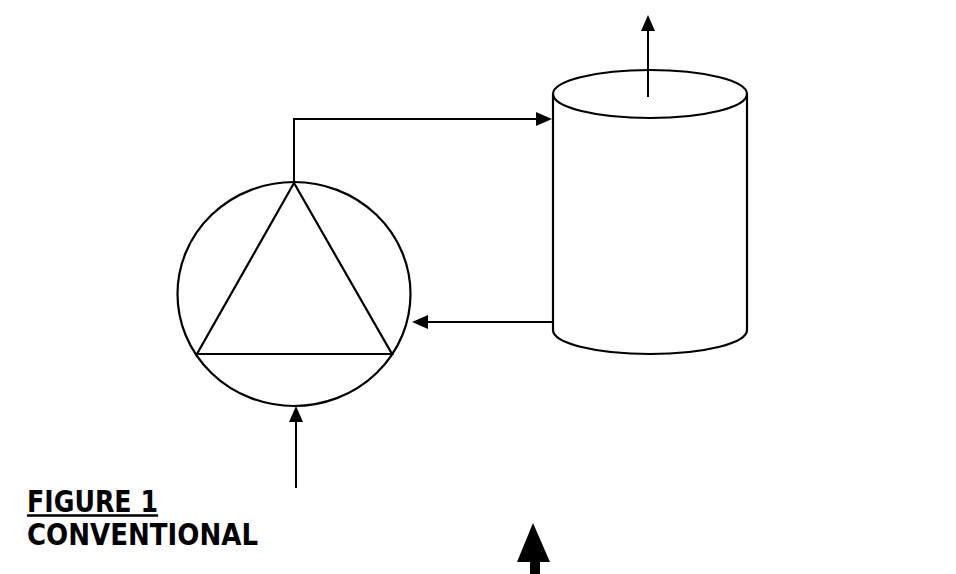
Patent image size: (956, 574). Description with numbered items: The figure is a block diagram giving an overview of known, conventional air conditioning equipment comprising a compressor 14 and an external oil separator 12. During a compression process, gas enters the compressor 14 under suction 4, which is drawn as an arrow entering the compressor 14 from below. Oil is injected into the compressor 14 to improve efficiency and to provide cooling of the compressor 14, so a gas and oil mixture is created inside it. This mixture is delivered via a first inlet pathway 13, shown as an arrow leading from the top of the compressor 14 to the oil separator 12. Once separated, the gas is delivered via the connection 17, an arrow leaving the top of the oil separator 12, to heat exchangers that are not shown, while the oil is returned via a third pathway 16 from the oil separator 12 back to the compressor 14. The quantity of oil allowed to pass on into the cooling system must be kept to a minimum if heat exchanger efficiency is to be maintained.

The suction 4 is at (309, 447).
The external oil separator 12 is at (657, 355).
The first inlet pathway 13 is at (423, 134).
The compressor 14 is at (212, 213).
The third pathway 16 is at (482, 305).
The connection 17 is at (671, 56).